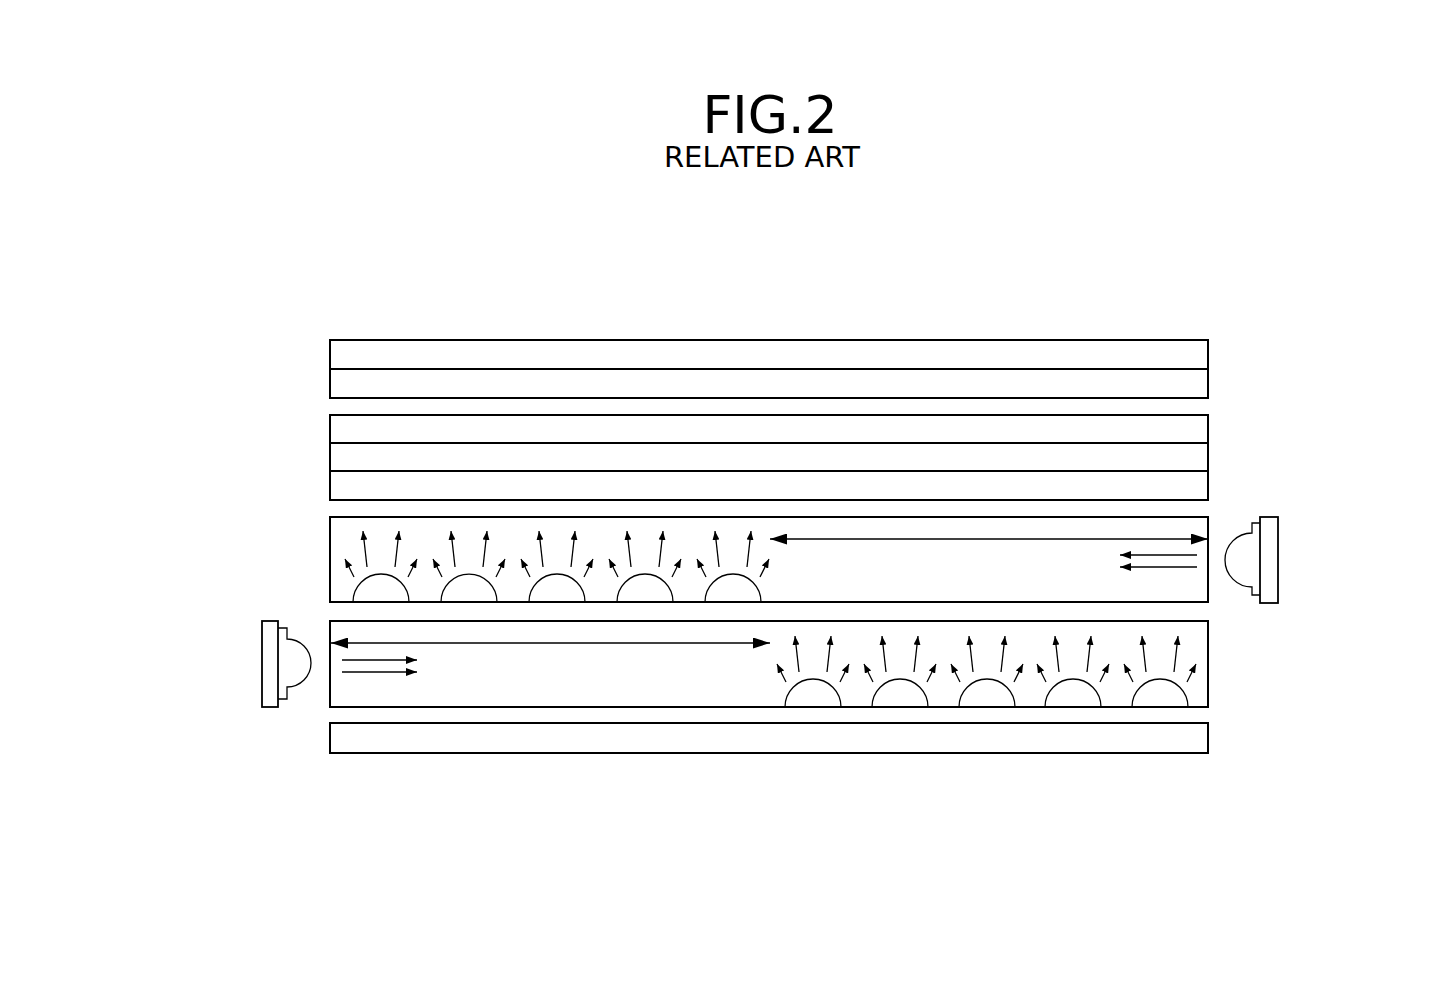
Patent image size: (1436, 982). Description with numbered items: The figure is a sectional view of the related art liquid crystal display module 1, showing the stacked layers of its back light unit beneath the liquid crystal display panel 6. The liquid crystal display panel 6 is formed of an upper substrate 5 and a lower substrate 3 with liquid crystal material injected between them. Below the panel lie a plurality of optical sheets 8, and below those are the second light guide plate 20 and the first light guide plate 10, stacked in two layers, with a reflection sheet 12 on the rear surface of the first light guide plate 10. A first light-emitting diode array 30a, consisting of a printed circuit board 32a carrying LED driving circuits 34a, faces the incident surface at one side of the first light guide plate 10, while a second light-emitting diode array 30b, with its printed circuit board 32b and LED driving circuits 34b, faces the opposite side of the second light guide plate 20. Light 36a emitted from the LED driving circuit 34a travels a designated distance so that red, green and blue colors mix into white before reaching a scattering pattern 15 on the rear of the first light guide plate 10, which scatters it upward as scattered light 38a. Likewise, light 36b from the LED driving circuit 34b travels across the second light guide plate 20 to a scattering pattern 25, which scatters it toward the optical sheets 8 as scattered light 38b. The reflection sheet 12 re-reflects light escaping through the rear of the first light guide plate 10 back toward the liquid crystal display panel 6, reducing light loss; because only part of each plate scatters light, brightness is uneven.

The liquid crystal display module 1 is at (270, 309).
The lower substrate 3 is at (1197, 381).
The upper substrate 5 is at (1197, 349).
The liquid crystal display panel 6 is at (1286, 338).
The optical sheets 8 is at (1196, 430).
The first light guide plate 10 is at (1200, 691).
The reflection sheet 12 is at (1200, 741).
The scattering pattern 15 is at (1068, 698).
The second light guide plate 20 is at (337, 552).
The scattering pattern 25 is at (563, 595).
The first light-emitting diode array 30a is at (200, 659).
The second light-emitting diode array 30b is at (1324, 558).
The printed circuit board 32a is at (262, 629).
The printed circuit board 32b is at (1272, 521).
The LED driving circuit 34a is at (282, 661).
The LED driving circuit 34b is at (1262, 565).
The light 36a is at (370, 672).
The light 36b is at (1180, 571).
The scattered light 38a is at (934, 665).
The scattered light 38b is at (680, 573).